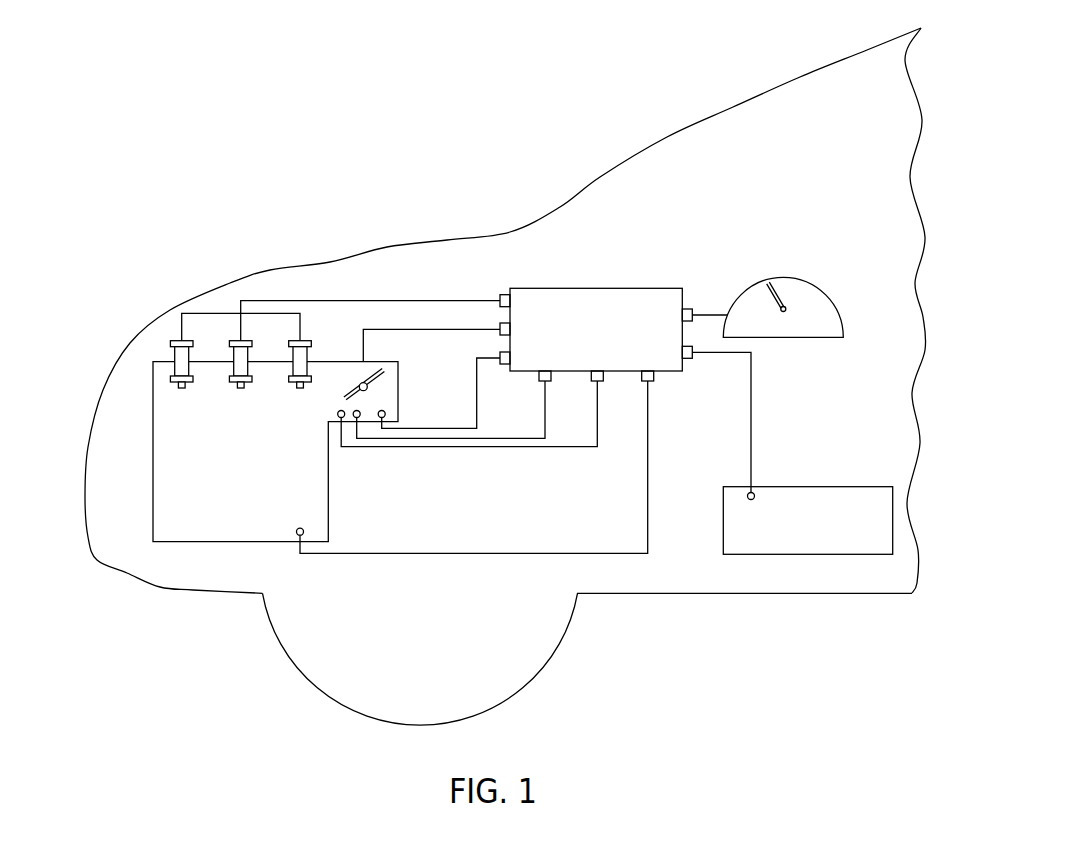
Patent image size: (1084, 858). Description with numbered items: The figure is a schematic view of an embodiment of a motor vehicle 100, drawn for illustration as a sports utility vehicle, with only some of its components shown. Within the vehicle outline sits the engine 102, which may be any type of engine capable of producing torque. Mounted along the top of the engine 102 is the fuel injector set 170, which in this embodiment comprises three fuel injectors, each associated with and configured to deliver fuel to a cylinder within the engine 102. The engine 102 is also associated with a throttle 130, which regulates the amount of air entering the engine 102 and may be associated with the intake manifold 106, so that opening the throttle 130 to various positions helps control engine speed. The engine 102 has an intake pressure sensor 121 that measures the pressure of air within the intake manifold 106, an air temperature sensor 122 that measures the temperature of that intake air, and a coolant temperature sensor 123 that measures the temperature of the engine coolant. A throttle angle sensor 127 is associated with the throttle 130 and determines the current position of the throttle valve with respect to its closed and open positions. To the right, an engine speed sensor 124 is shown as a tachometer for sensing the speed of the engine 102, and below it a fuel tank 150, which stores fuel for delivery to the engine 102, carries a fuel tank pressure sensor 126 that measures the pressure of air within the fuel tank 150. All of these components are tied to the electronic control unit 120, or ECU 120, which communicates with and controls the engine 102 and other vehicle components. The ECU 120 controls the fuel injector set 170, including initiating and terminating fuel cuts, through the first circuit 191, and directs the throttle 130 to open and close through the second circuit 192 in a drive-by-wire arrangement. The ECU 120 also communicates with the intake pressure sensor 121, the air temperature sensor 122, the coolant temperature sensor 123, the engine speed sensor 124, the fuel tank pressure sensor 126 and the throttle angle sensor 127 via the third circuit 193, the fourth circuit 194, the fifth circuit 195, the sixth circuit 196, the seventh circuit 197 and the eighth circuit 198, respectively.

The motor vehicle 100 is at (470, 150).
The engine 102 is at (330, 487).
The intake manifold 106 is at (321, 375).
The electronic control unit 120 is at (592, 288).
The intake pressure sensor 121 is at (337, 413).
The air temperature sensor 122 is at (359, 411).
The coolant temperature sensor 123 is at (297, 531).
The engine speed sensor 124 is at (843, 321).
The fuel tank pressure sensor 126 is at (755, 497).
The throttle angle sensor 127 is at (386, 412).
The throttle 130 is at (360, 382).
The fuel tank 150 is at (828, 486).
The fuel injector set 170 is at (180, 340).
The first circuit 191 is at (402, 300).
The second circuit 192 is at (452, 329).
The third circuit 193 is at (476, 448).
The fourth circuit 194 is at (520, 439).
The fifth circuit 195 is at (408, 555).
The sixth circuit 196 is at (708, 314).
The seventh circuit 197 is at (750, 425).
The eighth circuit 198 is at (478, 398).